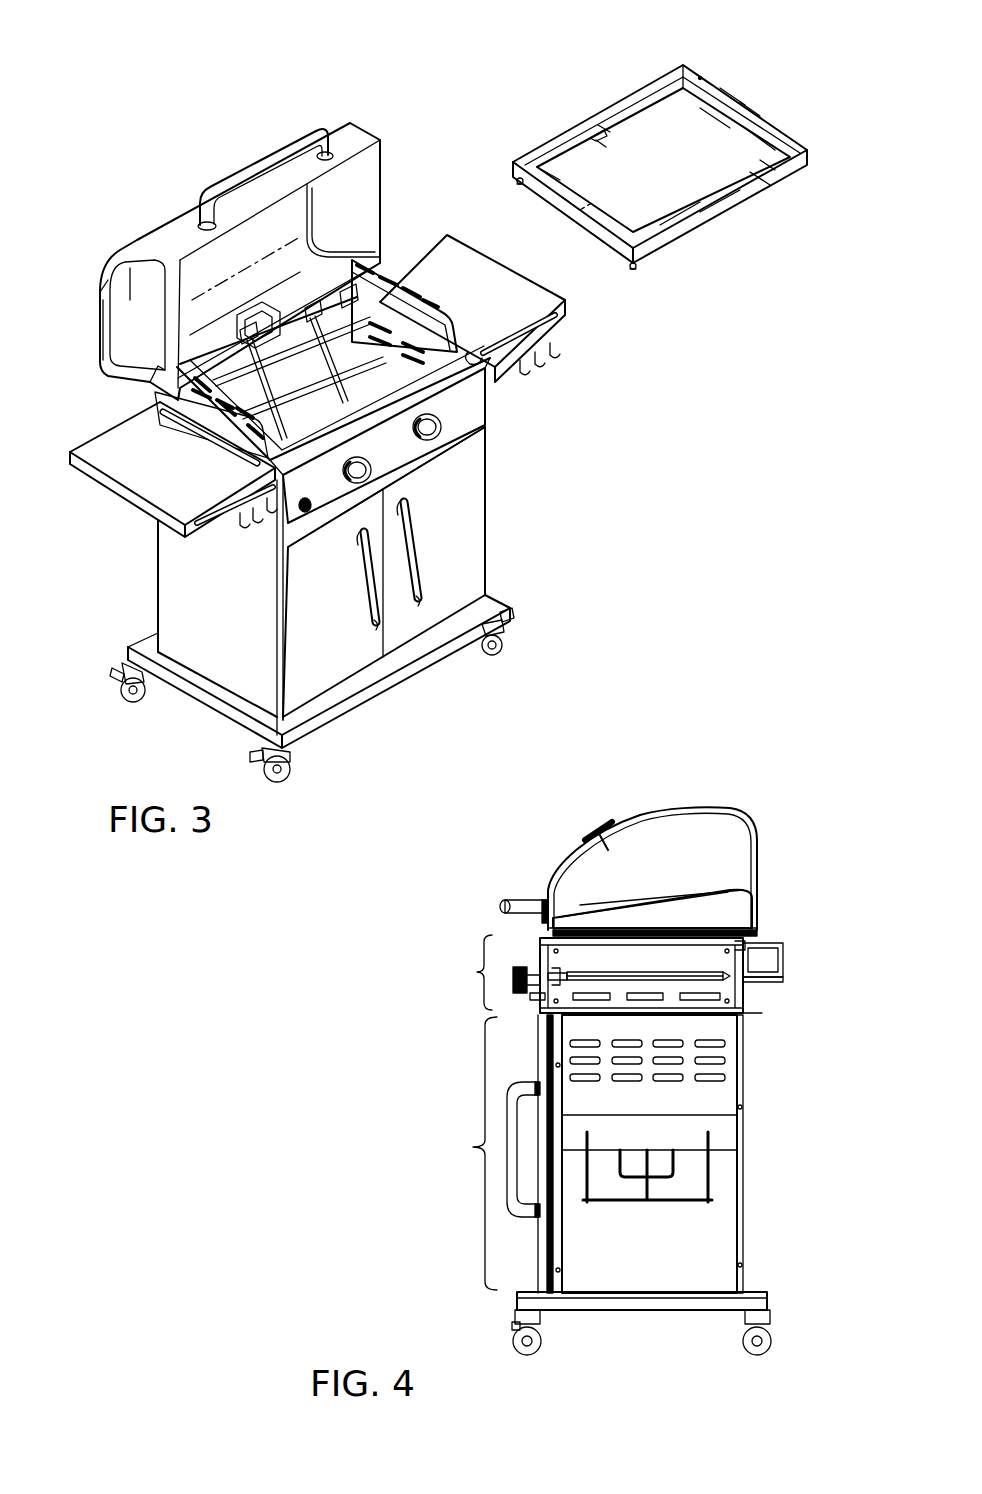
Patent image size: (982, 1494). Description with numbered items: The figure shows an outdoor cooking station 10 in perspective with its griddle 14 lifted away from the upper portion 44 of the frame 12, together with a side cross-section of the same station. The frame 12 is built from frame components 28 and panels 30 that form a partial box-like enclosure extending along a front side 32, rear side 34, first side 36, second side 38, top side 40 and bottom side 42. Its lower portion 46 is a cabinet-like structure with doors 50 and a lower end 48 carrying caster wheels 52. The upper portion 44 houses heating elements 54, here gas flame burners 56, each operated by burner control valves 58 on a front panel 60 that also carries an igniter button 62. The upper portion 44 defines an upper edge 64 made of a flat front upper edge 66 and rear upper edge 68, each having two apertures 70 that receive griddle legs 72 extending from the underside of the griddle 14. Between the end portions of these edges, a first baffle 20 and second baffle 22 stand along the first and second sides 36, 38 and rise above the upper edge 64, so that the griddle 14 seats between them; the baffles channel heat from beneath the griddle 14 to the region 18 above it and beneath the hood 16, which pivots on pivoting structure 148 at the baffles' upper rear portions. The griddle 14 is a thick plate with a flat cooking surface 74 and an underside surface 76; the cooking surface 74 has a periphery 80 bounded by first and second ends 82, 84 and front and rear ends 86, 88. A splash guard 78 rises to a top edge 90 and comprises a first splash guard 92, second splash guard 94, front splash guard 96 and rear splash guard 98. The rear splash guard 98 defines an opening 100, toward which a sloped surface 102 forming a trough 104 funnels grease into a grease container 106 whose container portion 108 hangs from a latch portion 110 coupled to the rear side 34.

In FIG. 3, the outdoor cooking station 10 is at (660, 515).
In FIG. 4, the outdoor cooking station 10 is at (855, 825).
In FIG. 3, the frame 12 is at (148, 572).
In FIG. 4, the frame 12 is at (752, 1070).
In FIG. 3, the griddle 14 is at (825, 105).
In FIG. 4, the griddle 14 is at (754, 915).
In FIG. 3, the hood 16 is at (382, 130).
In FIG. 4, the hood 16 is at (735, 800).
In FIG. 3, the region above the griddle 18 is at (395, 245).
In FIG. 4, the region above the griddle 18 is at (630, 872).
In FIG. 3, the first baffle 20 is at (158, 415).
In FIG. 4, the first baffle 20 is at (700, 895).
In FIG. 3, the second baffle 22 is at (400, 285).
In FIG. 4, the frame components 28 is at (742, 1037).
In FIG. 3, the panels 30 is at (165, 603).
In FIG. 4, the panels 30 is at (715, 1100).
In FIG. 3, the front side 32 is at (580, 470).
In FIG. 4, the front side 32 is at (438, 1045).
In FIG. 3, the rear side 34 is at (80, 305).
In FIG. 4, the rear side 34 is at (860, 1015).
In FIG. 3, the first side 36 is at (95, 510).
In FIG. 3, the second side 38 is at (550, 270).
In FIG. 3, the top side 40 is at (178, 165).
In FIG. 4, the top side 40 is at (690, 775).
In FIG. 3, the bottom side 42 is at (345, 772).
In FIG. 4, the bottom side 42 is at (640, 1345).
In FIG. 3, the upper portion 44 is at (500, 392).
In FIG. 4, the upper portion 44 is at (590, 974).
In FIG. 3, the lower portion 46 is at (497, 470).
In FIG. 4, the lower portion 46 is at (464, 1153).
In FIG. 3, the lower end 48 is at (390, 685).
In FIG. 4, the lower end 48 is at (770, 1300).
In FIG. 3, the doors 50 is at (470, 548).
In FIG. 4, the doors 50 is at (540, 1232).
In FIG. 3, the wheels 52 is at (490, 648).
In FIG. 4, the wheels 52 is at (512, 1344).
In FIG. 3, the heating elements 54 is at (350, 285).
In FIG. 4, the heating elements 54 is at (655, 973).
In FIG. 3, the gas flame burners 56 is at (238, 352).
In FIG. 4, the gas flame burners 56 is at (640, 970).
In FIG. 3, the burner control valves 58 is at (440, 430).
In FIG. 4, the burner control valves 58 is at (512, 965).
In FIG. 3, the front panel 60 is at (480, 420).
In FIG. 3, the igniter button 62 is at (300, 520).
In FIG. 3, the upper edge 64 is at (275, 300).
In FIG. 3, the front upper edge 66 is at (370, 410).
In FIG. 3, the rear upper edge 68 is at (300, 290).
In FIG. 3, the apertures 70 is at (470, 355).
In FIG. 3, the griddle legs 72 is at (516, 195).
In FIG. 3, the cooking surface 74 is at (765, 165).
In FIG. 3, the underside surface 76 is at (722, 205).
In FIG. 3, the splash guard 78 is at (712, 70).
In FIG. 3, the cooking surface periphery 80 is at (750, 130).
In FIG. 3, the first end 82 is at (575, 201).
In FIG. 3, the second end 84 is at (715, 110).
In FIG. 3, the front end 86 is at (681, 222).
In FIG. 3, the rear end 88 is at (550, 166).
In FIG. 3, the top edge 90 is at (737, 85).
In FIG. 3, the first splash guard 92 is at (540, 205).
In FIG. 3, the second splash guard 94 is at (748, 100).
In FIG. 3, the front splash guard 96 is at (760, 170).
In FIG. 3, the rear splash guard 98 is at (662, 85).
In FIG. 3, the opening 100 is at (600, 130).
In FIG. 3, the sloped surface 102 is at (609, 134).
In FIG. 3, the trough 104 is at (600, 139).
In FIG. 4, the grease container 106 is at (790, 962).
In FIG. 4, the container portion 108 is at (782, 978).
In FIG. 4, the latch portion 110 is at (746, 945).
In FIG. 3, the pivoting structure 148 is at (150, 385).